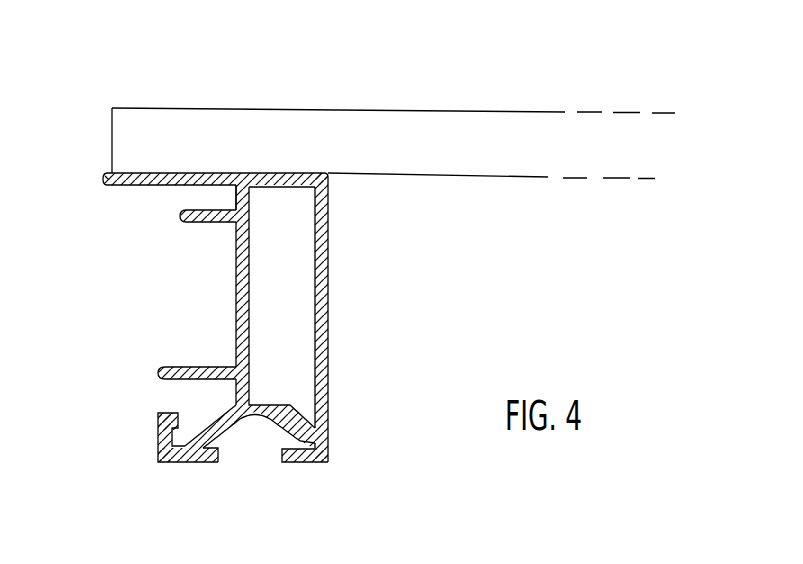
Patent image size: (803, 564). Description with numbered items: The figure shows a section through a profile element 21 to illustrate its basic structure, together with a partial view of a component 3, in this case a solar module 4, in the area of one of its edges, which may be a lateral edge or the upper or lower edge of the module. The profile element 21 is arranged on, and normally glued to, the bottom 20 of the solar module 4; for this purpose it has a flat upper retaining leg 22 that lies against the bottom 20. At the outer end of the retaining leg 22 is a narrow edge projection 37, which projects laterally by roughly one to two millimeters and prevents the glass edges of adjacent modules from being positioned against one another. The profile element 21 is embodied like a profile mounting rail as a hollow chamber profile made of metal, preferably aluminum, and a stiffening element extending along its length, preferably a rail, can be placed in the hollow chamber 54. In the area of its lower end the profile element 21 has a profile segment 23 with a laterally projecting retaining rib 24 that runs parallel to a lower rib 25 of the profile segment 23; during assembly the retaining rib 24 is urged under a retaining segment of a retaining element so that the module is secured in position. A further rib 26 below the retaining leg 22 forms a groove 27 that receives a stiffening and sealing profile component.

The component 3 is at (333, 80).
The solar module 4 is at (479, 120).
The bottom 20 is at (441, 178).
The profile element 21 is at (331, 333).
The upper retaining leg 22 is at (177, 173).
The profile segment 23 is at (172, 467).
The retaining rib 24 is at (182, 368).
The lower rib 25 is at (208, 464).
The rib 26 is at (200, 224).
The groove 27 is at (180, 196).
The edge projection 37 is at (105, 175).
The hollow chamber 54 is at (303, 296).